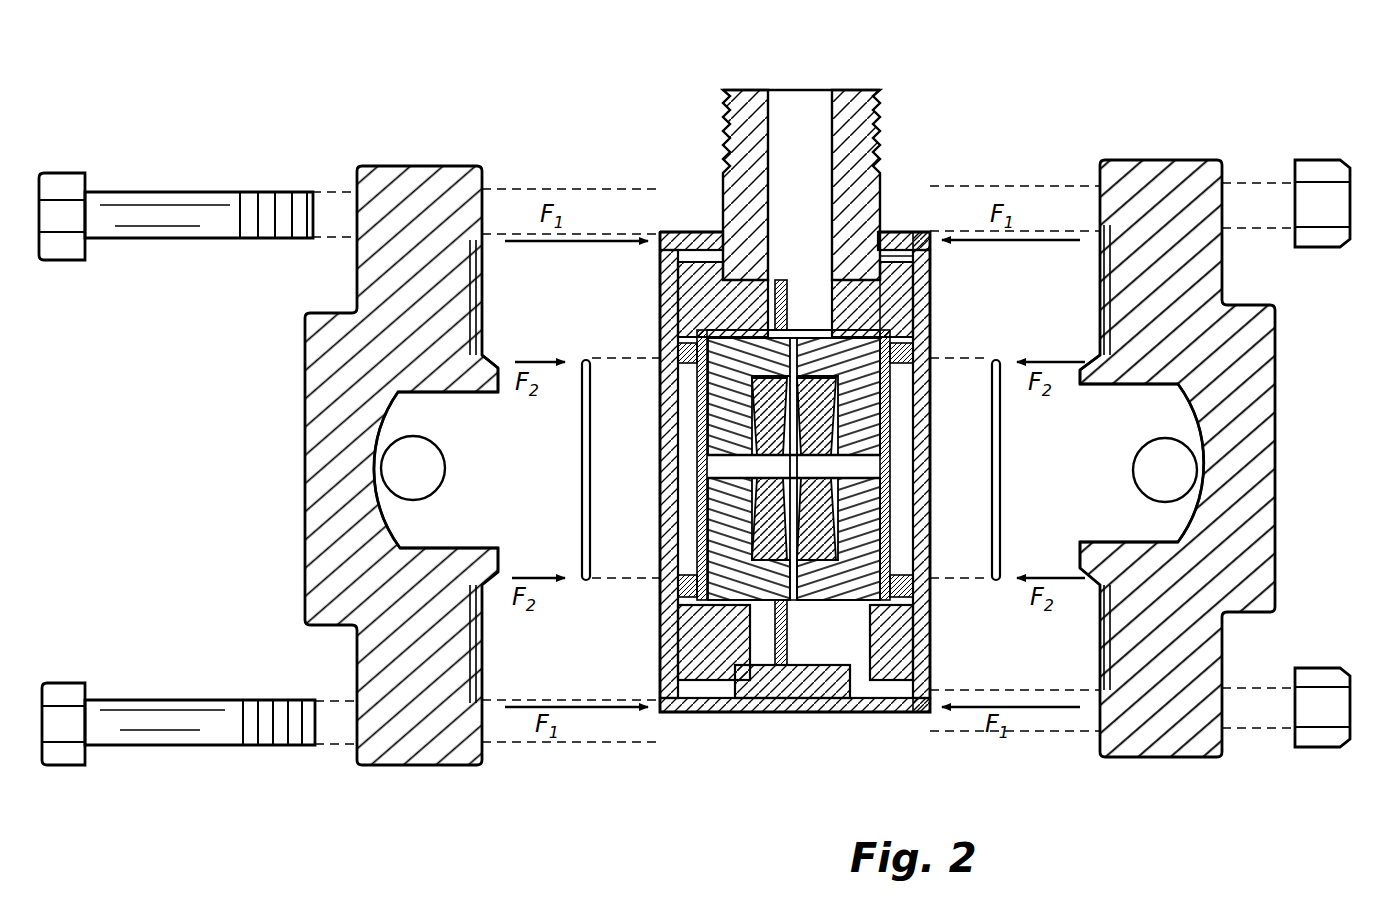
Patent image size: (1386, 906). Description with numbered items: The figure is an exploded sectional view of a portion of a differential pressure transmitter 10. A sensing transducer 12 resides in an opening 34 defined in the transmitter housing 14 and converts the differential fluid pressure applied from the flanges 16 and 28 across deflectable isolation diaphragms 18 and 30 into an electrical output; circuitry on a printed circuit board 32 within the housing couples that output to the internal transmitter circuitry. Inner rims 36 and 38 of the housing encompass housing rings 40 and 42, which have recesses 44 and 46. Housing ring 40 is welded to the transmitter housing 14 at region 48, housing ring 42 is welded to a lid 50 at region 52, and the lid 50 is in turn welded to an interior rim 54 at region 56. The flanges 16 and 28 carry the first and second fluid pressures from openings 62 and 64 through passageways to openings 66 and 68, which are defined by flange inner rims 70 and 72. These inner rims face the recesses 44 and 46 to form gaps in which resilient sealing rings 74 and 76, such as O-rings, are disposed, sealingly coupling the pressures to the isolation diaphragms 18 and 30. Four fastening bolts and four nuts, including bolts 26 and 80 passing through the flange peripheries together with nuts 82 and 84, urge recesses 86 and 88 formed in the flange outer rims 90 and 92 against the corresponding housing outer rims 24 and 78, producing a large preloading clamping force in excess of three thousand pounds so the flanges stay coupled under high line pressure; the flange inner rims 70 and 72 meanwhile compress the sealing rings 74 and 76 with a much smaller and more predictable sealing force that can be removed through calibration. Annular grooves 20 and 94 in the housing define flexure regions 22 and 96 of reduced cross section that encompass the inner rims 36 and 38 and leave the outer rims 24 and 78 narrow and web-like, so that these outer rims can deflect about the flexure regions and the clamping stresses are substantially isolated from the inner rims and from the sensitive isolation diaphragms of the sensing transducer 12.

The differential pressure transmitter 10 is at (806, 80).
The sensing transducer 12 is at (905, 420).
The transmitter housing 14 is at (722, 175).
The flange 16 is at (385, 168).
The isolation diaphragm 18 is at (700, 490).
The annular groove 20 is at (700, 232).
The flexure region 22 is at (770, 240).
The outer rim 24 is at (670, 235).
The fastening bolt 26 is at (210, 195).
The flange 28 is at (1180, 162).
The isolation diaphragm 30 is at (880, 470).
The printed circuit board 32 is at (787, 650).
The opening 34 is at (850, 650).
The inner rim 36 is at (678, 275).
The inner rim 38 is at (915, 290).
The housing ring 40 is at (688, 350).
The housing ring 42 is at (905, 368).
The recess 44 is at (688, 582).
The recess 46 is at (905, 582).
The weld region 48 is at (700, 330).
The lid 50 is at (895, 305).
The weld region 52 is at (905, 345).
The interior rim 54 is at (930, 246).
The weld region 56 is at (880, 255).
The opening 62 is at (435, 475).
The opening 64 is at (1155, 445).
The opening 66 is at (472, 520).
The opening 68 is at (1095, 508).
The inner rim 70 is at (495, 370).
The inner rim 72 is at (1085, 375).
The sealing ring 74 is at (582, 432).
The sealing ring 76 is at (1000, 432).
The outer rim 78 is at (930, 232).
The fastening bolt 80 is at (185, 700).
The nut 82 is at (1320, 165).
The nut 84 is at (1305, 740).
The recess 86 is at (500, 232).
The recess 88 is at (1080, 240).
The flange outer rim 90 is at (483, 228).
The flange outer rim 92 is at (1105, 225).
The annular groove 94 is at (918, 235).
The flexure region 96 is at (850, 270).